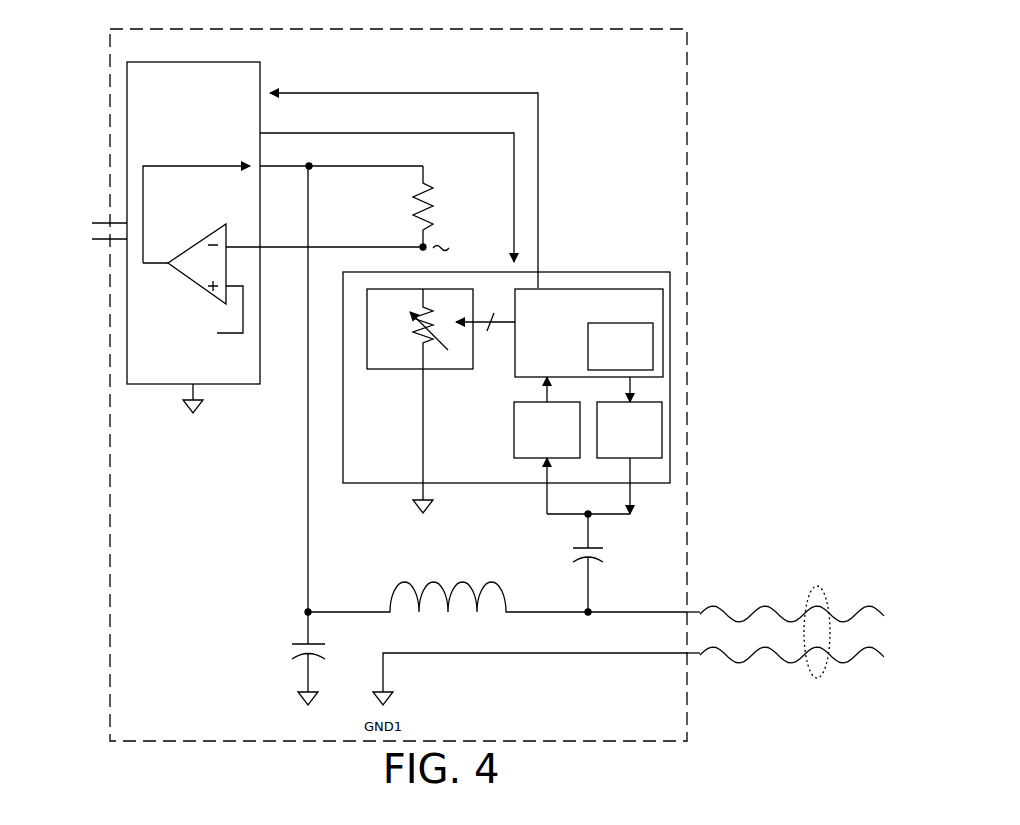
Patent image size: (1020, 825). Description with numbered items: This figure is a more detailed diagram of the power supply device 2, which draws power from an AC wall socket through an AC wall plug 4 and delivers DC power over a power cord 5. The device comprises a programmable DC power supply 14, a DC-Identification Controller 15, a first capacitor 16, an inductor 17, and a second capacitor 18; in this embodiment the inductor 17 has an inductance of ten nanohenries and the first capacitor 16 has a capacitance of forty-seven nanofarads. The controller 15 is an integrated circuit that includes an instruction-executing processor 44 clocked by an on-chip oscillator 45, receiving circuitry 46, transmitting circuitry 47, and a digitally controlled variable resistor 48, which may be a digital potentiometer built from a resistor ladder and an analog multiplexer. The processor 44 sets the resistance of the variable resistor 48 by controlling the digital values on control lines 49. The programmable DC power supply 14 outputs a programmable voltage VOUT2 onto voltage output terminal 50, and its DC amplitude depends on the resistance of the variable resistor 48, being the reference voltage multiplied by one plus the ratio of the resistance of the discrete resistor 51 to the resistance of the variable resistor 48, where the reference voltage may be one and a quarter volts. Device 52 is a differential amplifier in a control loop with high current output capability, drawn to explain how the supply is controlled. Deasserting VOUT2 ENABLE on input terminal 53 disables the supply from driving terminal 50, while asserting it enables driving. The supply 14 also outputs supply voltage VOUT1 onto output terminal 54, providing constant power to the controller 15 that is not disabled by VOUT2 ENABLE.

The power supply device 2 is at (640, 29).
The AC wall plug 4 is at (84, 241).
The power cord 5 is at (817, 587).
The programmable DC power supply 14 is at (207, 62).
The DC-Identification Controller 15 is at (643, 272).
The first capacitor 16 is at (601, 557).
The inductor 17 is at (463, 578).
The second capacitor 18 is at (325, 651).
The processor 44 is at (557, 353).
The on-chip oscillator 45 is at (612, 363).
The receiving circuitry 46 is at (539, 449).
The transmitting circuitry 47 is at (622, 449).
The digitally controlled variable resistor 48 is at (446, 312).
The control lines 49 is at (500, 319).
The voltage output terminal 50 is at (270, 169).
The discrete resistor 51 is at (447, 207).
The differential amplifier 52 is at (200, 240).
The input terminal 53 is at (280, 93).
The output terminal 54 is at (289, 133).